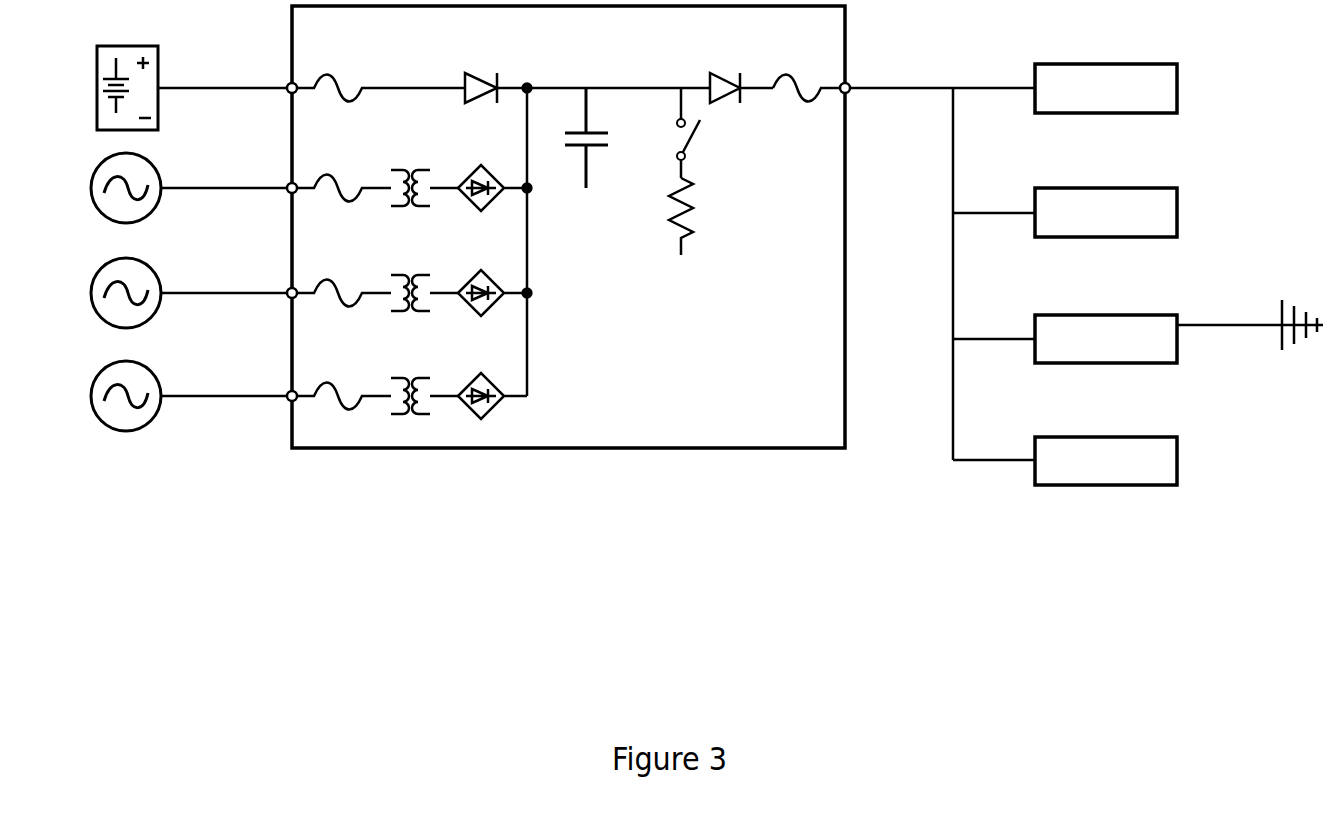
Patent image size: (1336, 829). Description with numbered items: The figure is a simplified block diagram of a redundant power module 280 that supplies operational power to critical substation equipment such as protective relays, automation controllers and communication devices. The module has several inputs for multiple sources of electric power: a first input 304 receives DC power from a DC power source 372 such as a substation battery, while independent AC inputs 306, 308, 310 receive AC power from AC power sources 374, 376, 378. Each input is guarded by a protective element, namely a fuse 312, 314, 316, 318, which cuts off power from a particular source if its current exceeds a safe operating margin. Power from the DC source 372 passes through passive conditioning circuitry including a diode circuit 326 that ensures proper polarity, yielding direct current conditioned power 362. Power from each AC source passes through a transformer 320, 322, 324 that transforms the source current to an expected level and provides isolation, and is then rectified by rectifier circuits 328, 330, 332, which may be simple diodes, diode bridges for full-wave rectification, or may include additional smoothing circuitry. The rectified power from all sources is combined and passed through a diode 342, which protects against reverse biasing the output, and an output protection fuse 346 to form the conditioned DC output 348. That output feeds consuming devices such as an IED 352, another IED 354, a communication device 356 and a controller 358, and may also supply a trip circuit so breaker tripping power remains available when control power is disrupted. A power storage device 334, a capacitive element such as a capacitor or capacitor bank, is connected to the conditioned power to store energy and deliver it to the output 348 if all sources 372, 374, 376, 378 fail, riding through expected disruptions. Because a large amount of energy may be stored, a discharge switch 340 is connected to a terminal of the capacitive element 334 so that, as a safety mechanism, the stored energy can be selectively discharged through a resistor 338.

The redundant power module 280 is at (697, 449).
The first input 304 is at (287, 85).
The AC input 306 is at (287, 185).
The AC input 308 is at (287, 290).
The AC input 310 is at (287, 393).
The fuse 312 is at (330, 82).
The fuse 314 is at (330, 180).
The fuse 316 is at (330, 285).
The fuse 318 is at (330, 388).
The transformer 320 is at (400, 170).
The transformer 322 is at (400, 275).
The transformer 324 is at (400, 378).
The diode circuit 326 is at (490, 63).
The rectifier circuit 328 is at (491, 170).
The rectifier circuit 330 is at (493, 280).
The rectifier circuit 332 is at (493, 382).
The power storage device 334 is at (598, 148).
The resistor 338 is at (670, 228).
The discharge switch 340 is at (688, 143).
The diode 342 is at (737, 66).
The output protection fuse 346 is at (797, 82).
The DC output 348 is at (878, 85).
The IED 352 is at (1102, 50).
The IED 354 is at (1102, 174).
The communication device 356 is at (1102, 302).
The controller 358 is at (1102, 424).
The direct current conditioned power 362 is at (552, 87).
The DC power source 372 is at (97, 75).
The AC power source 374 is at (95, 175).
The AC power source 376 is at (95, 280).
The AC power source 378 is at (95, 383).